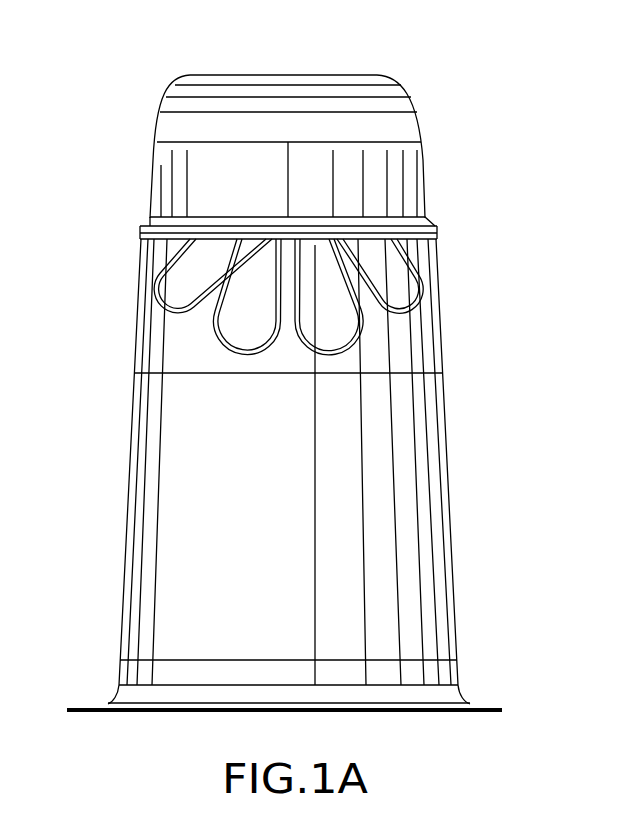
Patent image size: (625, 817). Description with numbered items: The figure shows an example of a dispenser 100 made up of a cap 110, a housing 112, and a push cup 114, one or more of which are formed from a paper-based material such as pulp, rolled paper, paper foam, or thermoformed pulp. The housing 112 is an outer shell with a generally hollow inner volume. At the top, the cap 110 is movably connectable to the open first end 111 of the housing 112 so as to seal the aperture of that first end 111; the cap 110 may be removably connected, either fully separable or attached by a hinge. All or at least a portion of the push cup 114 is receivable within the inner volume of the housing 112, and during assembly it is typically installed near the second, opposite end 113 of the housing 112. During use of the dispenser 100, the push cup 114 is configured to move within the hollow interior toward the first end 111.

The dispenser 100 is at (447, 602).
The cap 110 is at (242, 158).
The first end 111 is at (434, 224).
The housing 112 is at (178, 430).
The second end 113 is at (467, 703).
The push cup 114 is at (132, 678).